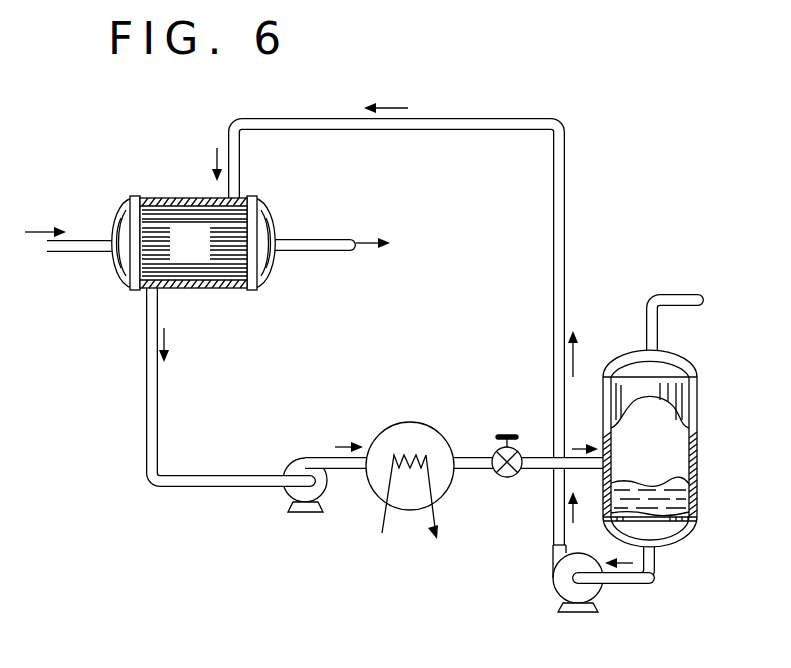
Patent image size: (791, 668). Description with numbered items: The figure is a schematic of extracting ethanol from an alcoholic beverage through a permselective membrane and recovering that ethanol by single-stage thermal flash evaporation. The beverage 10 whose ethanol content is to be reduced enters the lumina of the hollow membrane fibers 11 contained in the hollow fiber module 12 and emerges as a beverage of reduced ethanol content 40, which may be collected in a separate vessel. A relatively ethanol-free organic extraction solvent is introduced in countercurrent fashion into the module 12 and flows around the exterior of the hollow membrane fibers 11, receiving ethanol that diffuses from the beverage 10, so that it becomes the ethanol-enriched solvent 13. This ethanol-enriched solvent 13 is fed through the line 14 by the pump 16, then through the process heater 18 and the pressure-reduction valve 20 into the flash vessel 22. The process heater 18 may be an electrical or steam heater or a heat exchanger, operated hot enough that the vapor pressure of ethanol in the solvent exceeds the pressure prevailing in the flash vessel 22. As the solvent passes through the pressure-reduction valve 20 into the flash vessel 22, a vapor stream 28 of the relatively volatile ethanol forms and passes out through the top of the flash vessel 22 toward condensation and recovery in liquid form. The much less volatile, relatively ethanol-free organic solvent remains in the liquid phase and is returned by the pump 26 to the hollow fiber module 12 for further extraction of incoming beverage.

The beverage 10 is at (73, 252).
The hollow membrane fibers 11 is at (194, 236).
The hollow fiber module 12 is at (173, 197).
The ethanol-enriched solvent 13 is at (210, 274).
The line 14 is at (146, 367).
The pump 16 is at (296, 459).
The process heater 18 is at (417, 421).
The pressure-reduction valve 20 is at (507, 478).
The flash vessel 22 is at (661, 439).
The pump 26 is at (552, 566).
The vapor stream 28 is at (655, 439).
The beverage of reduced ethanol content 40 is at (318, 238).